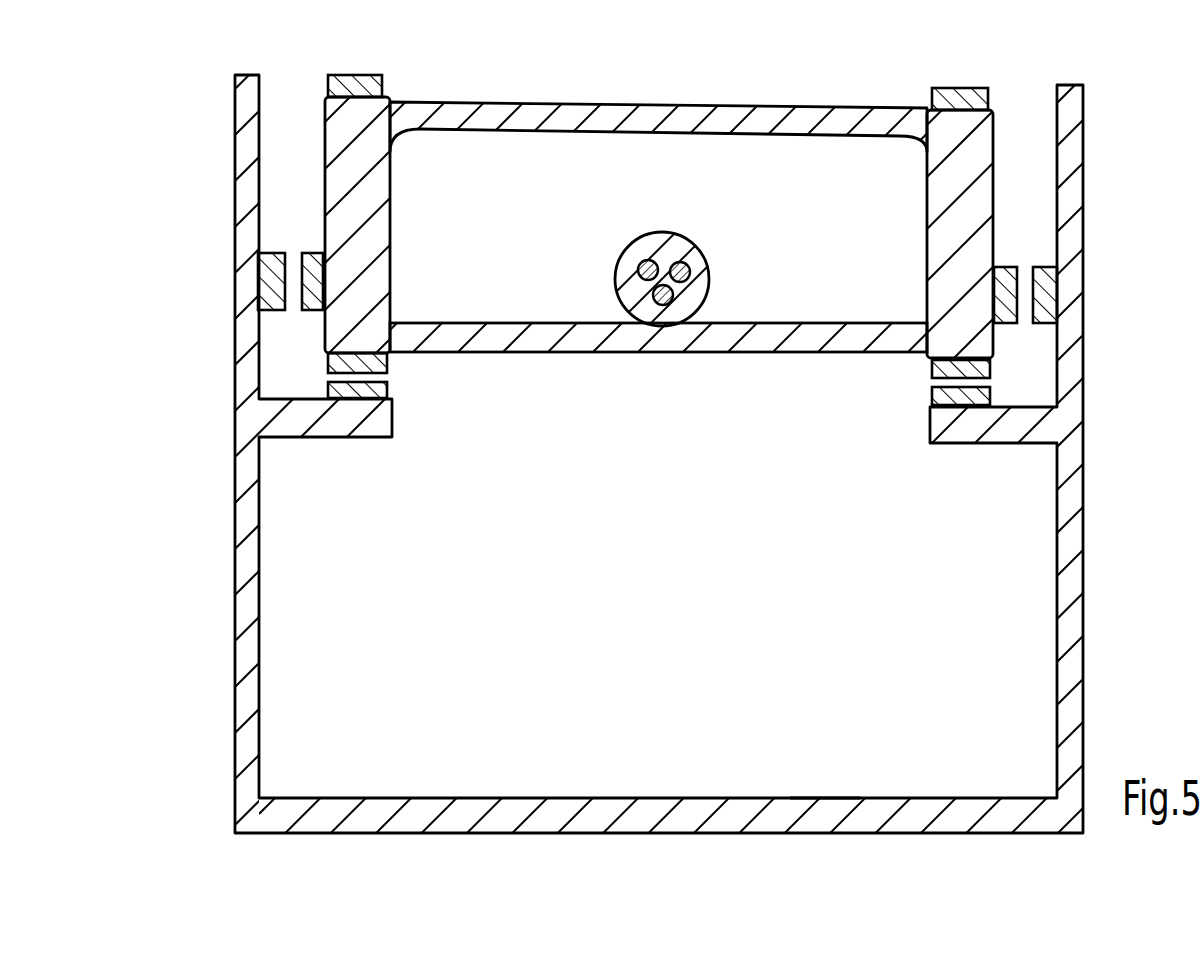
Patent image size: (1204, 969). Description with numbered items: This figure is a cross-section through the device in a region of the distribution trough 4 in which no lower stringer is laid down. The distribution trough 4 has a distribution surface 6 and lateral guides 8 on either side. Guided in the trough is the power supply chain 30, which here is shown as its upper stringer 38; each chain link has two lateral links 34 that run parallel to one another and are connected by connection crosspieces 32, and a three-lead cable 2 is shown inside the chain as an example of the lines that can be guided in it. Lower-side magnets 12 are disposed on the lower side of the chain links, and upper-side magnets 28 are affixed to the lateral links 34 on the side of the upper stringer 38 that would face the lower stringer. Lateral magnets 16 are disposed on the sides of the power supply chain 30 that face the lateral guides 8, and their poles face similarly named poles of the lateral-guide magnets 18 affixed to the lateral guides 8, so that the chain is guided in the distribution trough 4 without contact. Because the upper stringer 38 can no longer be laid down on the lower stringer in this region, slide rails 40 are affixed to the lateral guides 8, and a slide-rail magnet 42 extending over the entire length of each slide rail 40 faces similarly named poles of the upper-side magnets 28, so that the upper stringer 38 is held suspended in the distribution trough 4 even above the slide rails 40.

The three-lead cable 2 is at (673, 262).
The distribution trough 4 is at (642, 824).
The distribution surface 6 is at (804, 800).
The lateral guides 8 is at (245, 572).
The lower-side magnets 12 is at (358, 82).
The lateral magnets 16 is at (311, 253).
The lateral-guide magnets 18 is at (271, 252).
The upper-side magnets 28 is at (388, 364).
The power supply chain 30 is at (694, 90).
The connection crosspieces 32 is at (505, 137).
The lateral links 34 is at (362, 198).
The upper stringer 38 is at (806, 272).
The slide rails 40 is at (372, 430).
The slide-rail magnet 42 is at (390, 390).